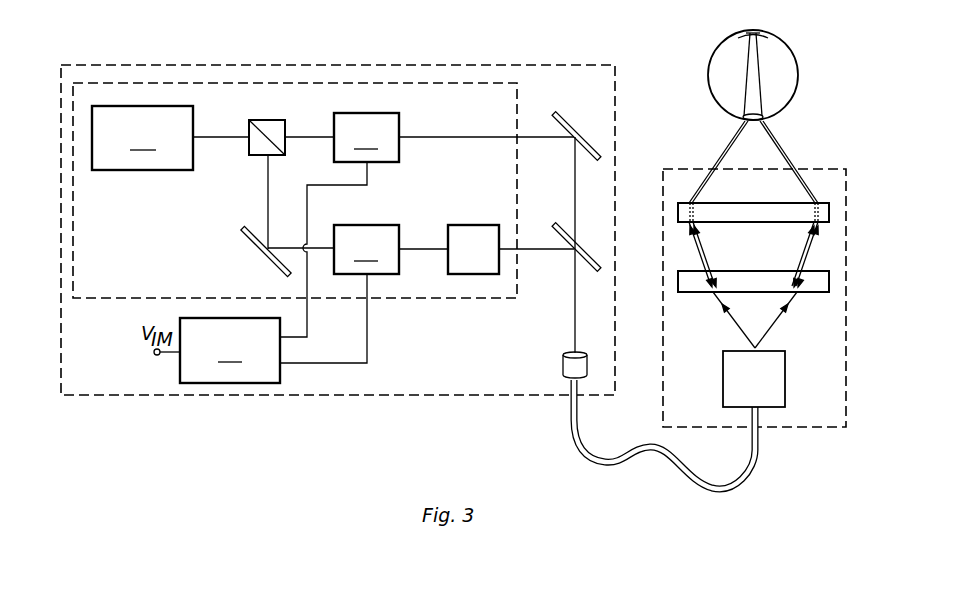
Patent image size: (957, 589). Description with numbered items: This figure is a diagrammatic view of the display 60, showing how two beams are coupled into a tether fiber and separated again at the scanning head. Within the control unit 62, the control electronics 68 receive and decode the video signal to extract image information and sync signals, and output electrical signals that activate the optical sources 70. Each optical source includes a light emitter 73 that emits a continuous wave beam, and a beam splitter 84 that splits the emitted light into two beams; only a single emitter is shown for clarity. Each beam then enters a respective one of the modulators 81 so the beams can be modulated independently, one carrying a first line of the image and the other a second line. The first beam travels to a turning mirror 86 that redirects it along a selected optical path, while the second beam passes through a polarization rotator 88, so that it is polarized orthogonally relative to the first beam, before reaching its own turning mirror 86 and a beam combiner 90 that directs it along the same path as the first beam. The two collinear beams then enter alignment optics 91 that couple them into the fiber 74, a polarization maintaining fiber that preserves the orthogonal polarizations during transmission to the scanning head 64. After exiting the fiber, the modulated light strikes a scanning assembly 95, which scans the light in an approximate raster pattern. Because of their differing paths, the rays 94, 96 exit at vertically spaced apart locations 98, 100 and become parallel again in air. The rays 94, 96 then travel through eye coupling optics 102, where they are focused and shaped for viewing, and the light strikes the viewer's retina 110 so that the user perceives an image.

The display 60 is at (290, 426).
The control unit 62 is at (616, 100).
The scanning head 64 is at (846, 367).
The control electronics 68 is at (230, 350).
The optical sources 70 is at (220, 80).
The light emitter 73 is at (142, 138).
The fiber 74 is at (617, 462).
The modulators 81 is at (366, 193).
The beam splitter 84 is at (280, 120).
The turning mirror 86 is at (574, 120).
The polarization rotator 88 is at (473, 225).
The beam combiner 90 is at (588, 245).
The alignment optics 91 is at (563, 366).
The ray 94 is at (790, 283).
The scanning assembly 95 is at (723, 390).
The ray 96 is at (800, 288).
The location 98 is at (800, 272).
The location 100 is at (802, 280).
The eye coupling optics 102 is at (823, 205).
The retina 110 is at (766, 36).